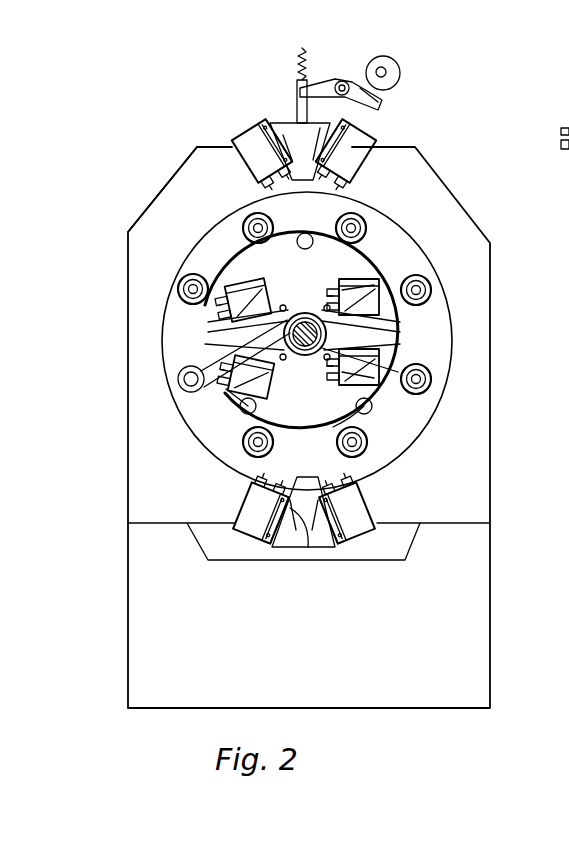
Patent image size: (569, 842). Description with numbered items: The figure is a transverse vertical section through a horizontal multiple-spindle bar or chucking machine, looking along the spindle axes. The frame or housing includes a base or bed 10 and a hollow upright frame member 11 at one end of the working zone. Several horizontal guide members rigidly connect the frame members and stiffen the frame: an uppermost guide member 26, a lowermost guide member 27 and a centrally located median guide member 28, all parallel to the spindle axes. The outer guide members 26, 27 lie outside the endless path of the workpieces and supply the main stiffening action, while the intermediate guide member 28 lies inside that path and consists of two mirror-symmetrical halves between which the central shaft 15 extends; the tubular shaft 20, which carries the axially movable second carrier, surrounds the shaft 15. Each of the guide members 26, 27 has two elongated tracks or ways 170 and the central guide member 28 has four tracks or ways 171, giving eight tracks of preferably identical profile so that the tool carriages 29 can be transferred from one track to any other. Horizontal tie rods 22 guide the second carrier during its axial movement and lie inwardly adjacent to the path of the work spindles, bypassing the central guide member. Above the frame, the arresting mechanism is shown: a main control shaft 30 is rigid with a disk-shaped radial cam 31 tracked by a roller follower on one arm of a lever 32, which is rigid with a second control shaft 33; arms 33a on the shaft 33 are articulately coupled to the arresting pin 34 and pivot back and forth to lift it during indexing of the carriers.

The base or bed 10 is at (481, 644).
The upright frame member 11 is at (176, 187).
The shaft 15 is at (372, 410).
The tubular shaft 20 is at (375, 362).
The tie rod 22 is at (310, 238).
The uppermost guide member 26 is at (283, 135).
The lowermost guide member 27 is at (287, 542).
The median or intermediate guide member 28 is at (430, 330).
The tool carriage 29 is at (240, 130).
The main control shaft 30 is at (400, 69).
The radial cam 31 is at (396, 92).
The lever 32 is at (350, 83).
The second control shaft 33 is at (333, 87).
The arm 33a is at (288, 57).
The arresting pin 34 is at (293, 103).
The track or way 170 is at (290, 155).
The track or way 171 is at (346, 288).